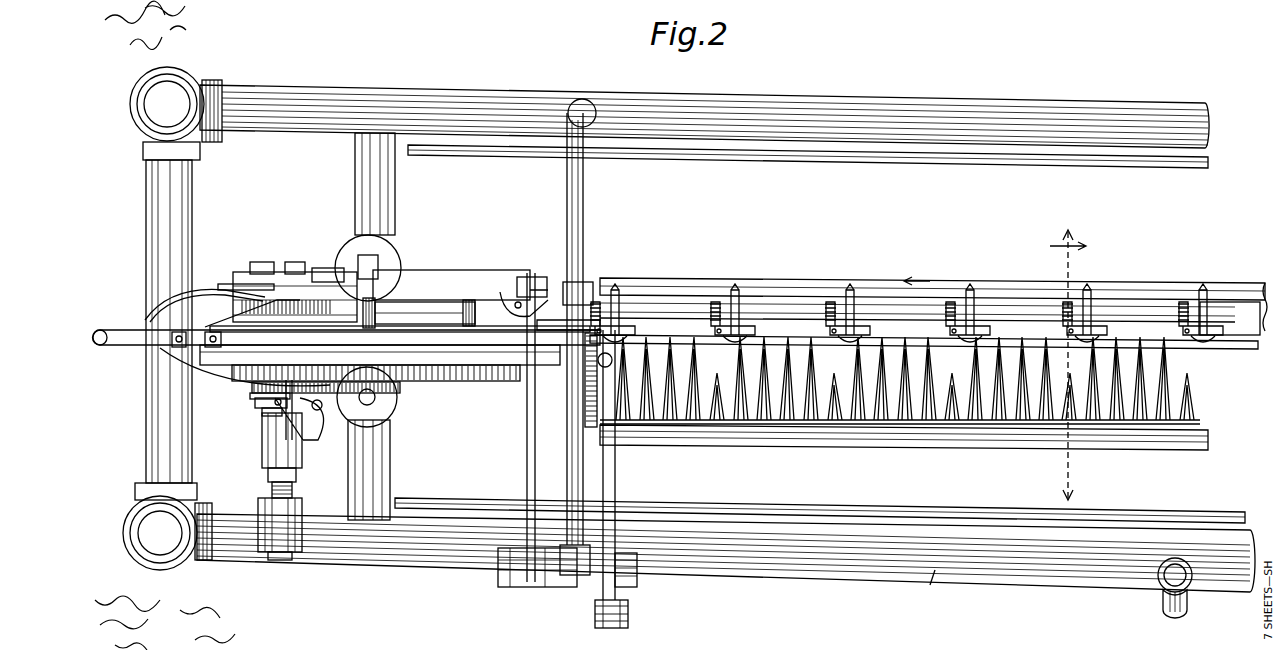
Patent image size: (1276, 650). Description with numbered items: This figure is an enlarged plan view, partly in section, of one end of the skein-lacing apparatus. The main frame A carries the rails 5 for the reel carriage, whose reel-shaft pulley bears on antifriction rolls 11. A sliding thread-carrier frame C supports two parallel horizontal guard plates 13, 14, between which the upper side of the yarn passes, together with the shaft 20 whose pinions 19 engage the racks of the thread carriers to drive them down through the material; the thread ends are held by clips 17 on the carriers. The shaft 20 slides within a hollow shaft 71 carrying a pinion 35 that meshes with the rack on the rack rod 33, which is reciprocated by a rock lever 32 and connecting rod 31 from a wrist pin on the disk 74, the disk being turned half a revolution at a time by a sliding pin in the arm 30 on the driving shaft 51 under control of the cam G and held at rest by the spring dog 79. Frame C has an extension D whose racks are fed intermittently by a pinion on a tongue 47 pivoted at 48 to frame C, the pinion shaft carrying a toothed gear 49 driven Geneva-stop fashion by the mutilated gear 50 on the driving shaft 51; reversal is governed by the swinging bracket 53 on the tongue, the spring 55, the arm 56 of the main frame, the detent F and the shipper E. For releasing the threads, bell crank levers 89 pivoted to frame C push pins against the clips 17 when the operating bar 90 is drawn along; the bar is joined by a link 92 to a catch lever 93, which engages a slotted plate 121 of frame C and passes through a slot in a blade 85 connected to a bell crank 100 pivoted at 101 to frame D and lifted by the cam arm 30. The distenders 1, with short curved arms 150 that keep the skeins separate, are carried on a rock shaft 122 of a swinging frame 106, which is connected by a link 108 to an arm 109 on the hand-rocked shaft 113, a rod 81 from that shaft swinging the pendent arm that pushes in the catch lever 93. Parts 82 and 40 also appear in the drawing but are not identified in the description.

The distenders 1 is at (735, 362).
The rails 5 is at (730, 157).
The antifriction rolls 11 is at (1068, 353).
The guard plate 13 is at (1242, 350).
The guard plate 14 is at (1228, 312).
The clips 17 is at (960, 343).
The pinions 19 is at (735, 292).
The shaft 20 is at (660, 300).
The arm 30 is at (256, 270).
The connecting rod 31 is at (325, 270).
The rock lever 32 is at (352, 260).
The rack rod 33 is at (368, 266).
The pinions 35 is at (385, 300).
The roller 40 is at (1160, 605).
The tongue 47 is at (510, 366).
The pivot 48 is at (566, 398).
The toothed gear 49 is at (450, 382).
The mutilated gear 50 is at (240, 366).
The driving shaft 51 is at (268, 490).
The swinging bracket 53 is at (262, 376).
The spring 55 is at (340, 395).
The arm 56 is at (263, 425).
The hollow shaft 71 is at (418, 308).
The disk 74 is at (292, 268).
The spring dog 79 is at (230, 285).
The rod 81 is at (527, 472).
The bracket plate 82 is at (525, 277).
The blade 85 is at (405, 393).
The bell crank levers 89 is at (855, 300).
The operating bar 90 is at (1030, 298).
The link 92 is at (575, 283).
The catch lever 93 is at (500, 290).
The bell crank 100 is at (212, 295).
The pivot 101 is at (185, 335).
The swinging frame 106 is at (578, 425).
The link 108 is at (616, 485).
The arm 109 is at (622, 626).
The shaft 113 is at (932, 584).
The plate 121 is at (440, 330).
The rock shaft 122 is at (945, 447).
The short curved arms 150 is at (722, 424).
The frame A is at (405, 562).
The frame C is at (1178, 283).
The extension D is at (118, 345).
The shipper E is at (322, 432).
The detent F is at (255, 404).
The cam G is at (295, 297).